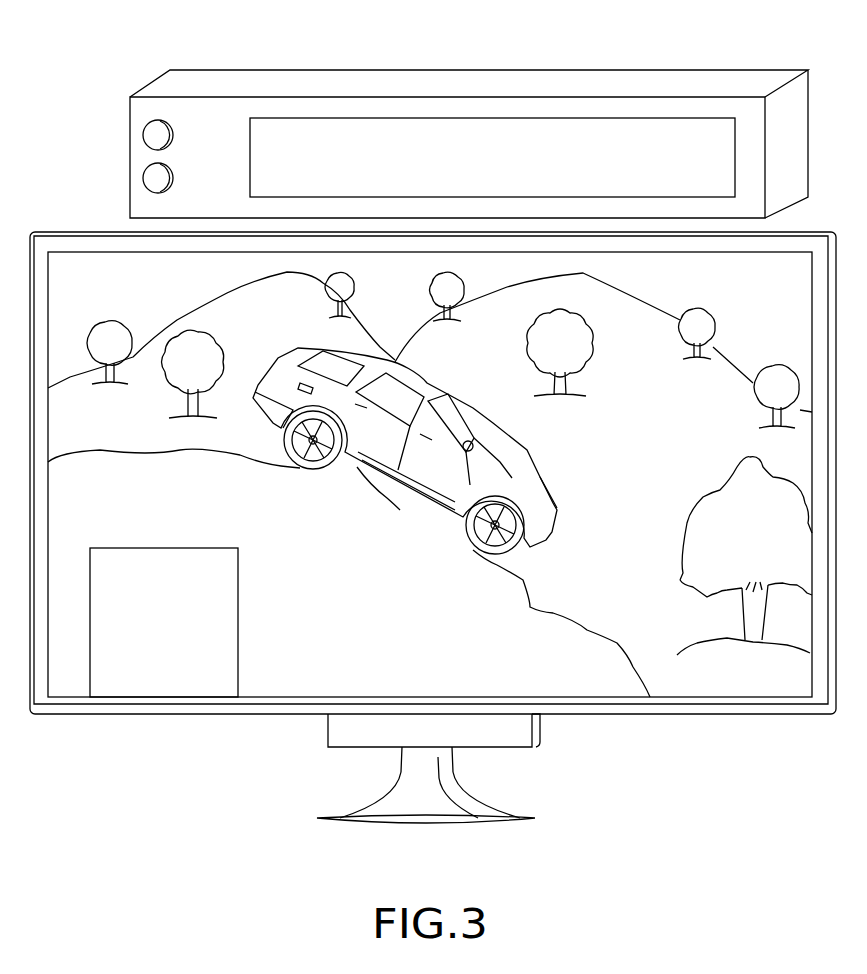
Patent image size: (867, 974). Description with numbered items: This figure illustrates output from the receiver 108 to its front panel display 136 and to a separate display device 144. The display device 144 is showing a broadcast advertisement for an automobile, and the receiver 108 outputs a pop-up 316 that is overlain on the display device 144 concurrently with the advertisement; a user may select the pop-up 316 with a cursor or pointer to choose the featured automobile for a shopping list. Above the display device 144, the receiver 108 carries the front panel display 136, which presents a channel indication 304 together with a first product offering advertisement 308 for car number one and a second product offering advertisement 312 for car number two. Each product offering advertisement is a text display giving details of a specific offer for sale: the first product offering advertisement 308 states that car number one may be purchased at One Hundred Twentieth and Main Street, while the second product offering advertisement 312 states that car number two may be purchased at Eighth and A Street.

The receiver 108 is at (208, 80).
The front panel display 136 is at (555, 128).
The channel indication 304 is at (302, 147).
The first product offering advertisement 308 is at (455, 128).
The second product offering advertisement 312 is at (672, 128).
The display device 144 is at (82, 268).
The pop-up 316 is at (85, 553).